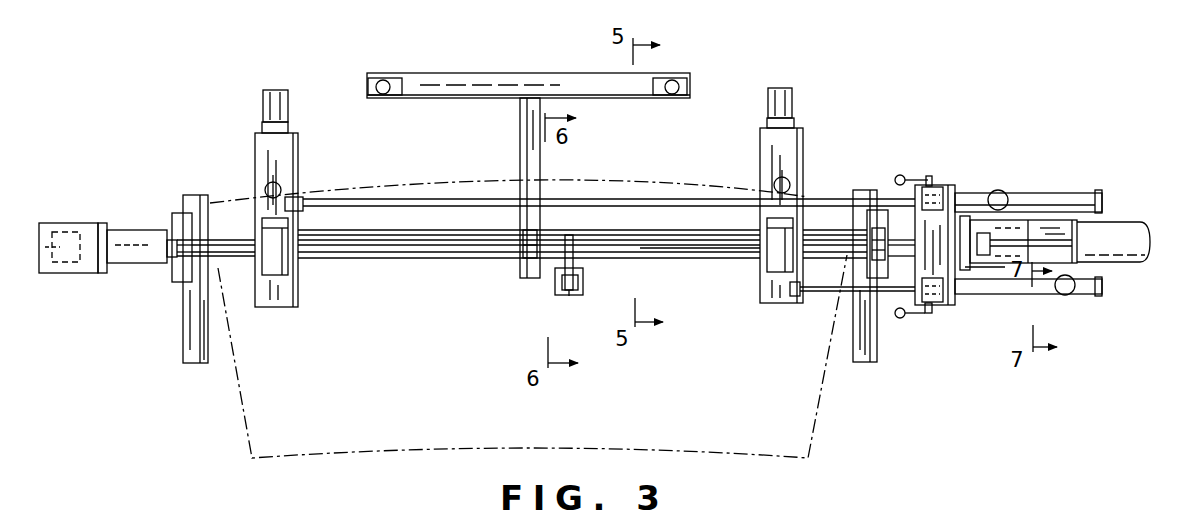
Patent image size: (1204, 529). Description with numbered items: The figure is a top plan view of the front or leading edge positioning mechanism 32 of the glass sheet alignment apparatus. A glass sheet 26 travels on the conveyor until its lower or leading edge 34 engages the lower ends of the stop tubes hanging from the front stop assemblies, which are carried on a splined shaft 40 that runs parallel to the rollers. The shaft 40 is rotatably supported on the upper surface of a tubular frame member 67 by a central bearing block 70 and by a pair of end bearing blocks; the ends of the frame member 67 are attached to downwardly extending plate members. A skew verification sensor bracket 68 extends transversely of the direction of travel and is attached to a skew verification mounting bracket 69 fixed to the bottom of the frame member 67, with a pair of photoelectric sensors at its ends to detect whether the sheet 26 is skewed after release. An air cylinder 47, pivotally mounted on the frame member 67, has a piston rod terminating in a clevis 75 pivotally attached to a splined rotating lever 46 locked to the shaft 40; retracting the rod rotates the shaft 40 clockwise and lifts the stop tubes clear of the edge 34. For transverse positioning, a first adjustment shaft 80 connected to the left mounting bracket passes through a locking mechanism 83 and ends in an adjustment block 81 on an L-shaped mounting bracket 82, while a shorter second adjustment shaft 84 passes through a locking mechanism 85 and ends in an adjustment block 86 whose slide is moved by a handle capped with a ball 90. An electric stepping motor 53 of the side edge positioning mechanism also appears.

The glass sheet 26 is at (818, 438).
The front or leading edge positioning mechanism 32 is at (915, 110).
The lower or leading edge 34 is at (357, 186).
The splined shaft 40 is at (407, 259).
The splined rotating lever 46 is at (578, 258).
The air cylinder 47 is at (570, 296).
The electric stepping motor 53 is at (1148, 232).
The tubular frame member 67 is at (683, 259).
The skew verification sensor bracket 68 is at (470, 73).
The skew verification mounting bracket 69 is at (520, 148).
The bearing block 70 is at (523, 260).
The clevis 75 is at (554, 286).
The first adjustment shaft 80 is at (612, 199).
The adjustment block 81 is at (1062, 190).
The L-shaped mounting bracket 82 is at (951, 186).
The locking mechanism 83 is at (938, 192).
The second adjustment shaft 84 is at (823, 297).
The locking mechanism 85 is at (936, 303).
The adjustment block 86 is at (1100, 300).
The ball 90 is at (1061, 296).